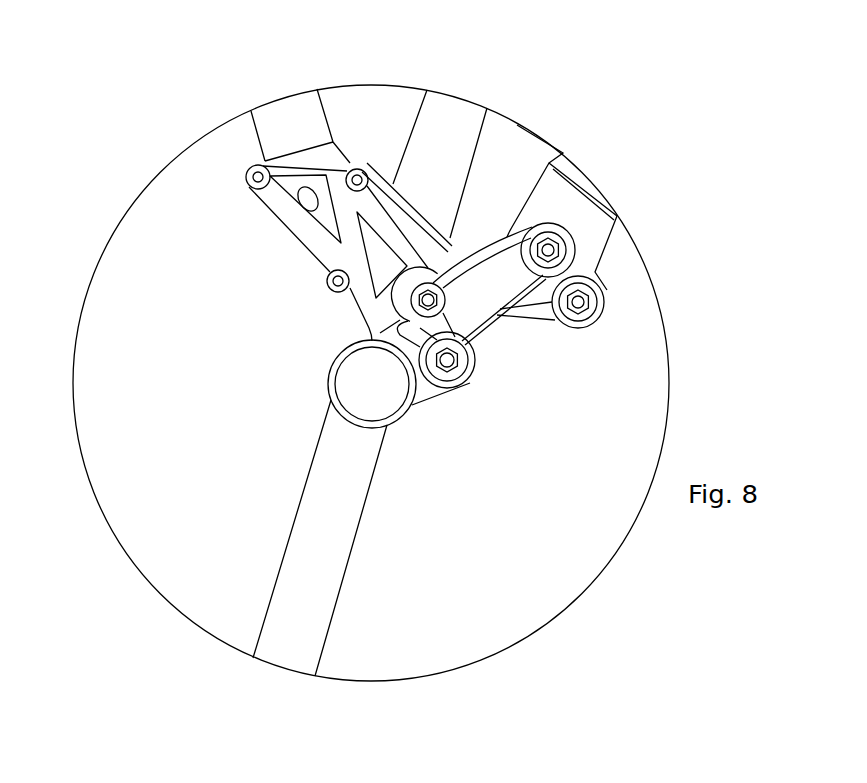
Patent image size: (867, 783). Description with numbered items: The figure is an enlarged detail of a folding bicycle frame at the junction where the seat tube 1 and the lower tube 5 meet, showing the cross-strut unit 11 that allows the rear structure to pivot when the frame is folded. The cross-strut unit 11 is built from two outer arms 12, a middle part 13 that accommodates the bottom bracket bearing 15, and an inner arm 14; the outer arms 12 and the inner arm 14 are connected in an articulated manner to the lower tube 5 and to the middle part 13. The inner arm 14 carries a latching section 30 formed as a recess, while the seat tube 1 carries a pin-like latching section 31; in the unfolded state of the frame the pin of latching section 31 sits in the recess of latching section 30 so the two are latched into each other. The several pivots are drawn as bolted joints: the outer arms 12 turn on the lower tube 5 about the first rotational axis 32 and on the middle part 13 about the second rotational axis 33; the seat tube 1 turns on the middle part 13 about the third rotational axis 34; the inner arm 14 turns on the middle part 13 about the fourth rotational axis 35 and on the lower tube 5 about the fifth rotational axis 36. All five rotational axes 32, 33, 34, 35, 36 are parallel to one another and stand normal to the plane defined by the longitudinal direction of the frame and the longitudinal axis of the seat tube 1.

The seat tube 1 is at (267, 112).
The lower tube 5 is at (603, 220).
The cross-strut unit 11 is at (308, 323).
The outer arms 12 is at (483, 292).
The middle part 13 is at (323, 220).
The inner arm 14 is at (397, 218).
The bottom bracket bearing 15 is at (380, 400).
The latching section 30 is at (359, 176).
The latching section 31 is at (351, 177).
The first rotational axis 32 is at (548, 250).
The second rotational axis 33 is at (447, 360).
The third rotational axis 34 is at (246, 172).
The fourth rotational axis 35 is at (428, 300).
The fifth rotational axis 36 is at (578, 302).